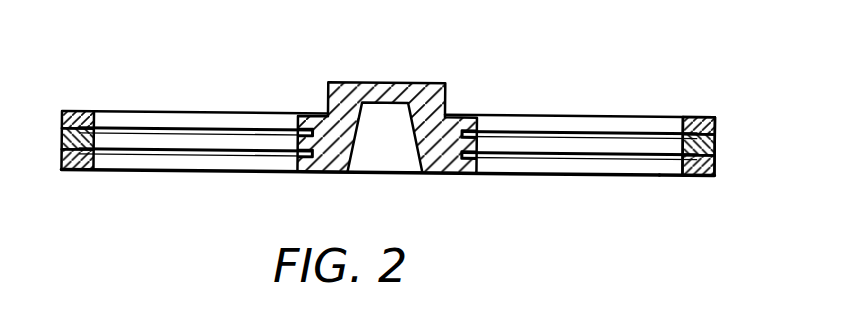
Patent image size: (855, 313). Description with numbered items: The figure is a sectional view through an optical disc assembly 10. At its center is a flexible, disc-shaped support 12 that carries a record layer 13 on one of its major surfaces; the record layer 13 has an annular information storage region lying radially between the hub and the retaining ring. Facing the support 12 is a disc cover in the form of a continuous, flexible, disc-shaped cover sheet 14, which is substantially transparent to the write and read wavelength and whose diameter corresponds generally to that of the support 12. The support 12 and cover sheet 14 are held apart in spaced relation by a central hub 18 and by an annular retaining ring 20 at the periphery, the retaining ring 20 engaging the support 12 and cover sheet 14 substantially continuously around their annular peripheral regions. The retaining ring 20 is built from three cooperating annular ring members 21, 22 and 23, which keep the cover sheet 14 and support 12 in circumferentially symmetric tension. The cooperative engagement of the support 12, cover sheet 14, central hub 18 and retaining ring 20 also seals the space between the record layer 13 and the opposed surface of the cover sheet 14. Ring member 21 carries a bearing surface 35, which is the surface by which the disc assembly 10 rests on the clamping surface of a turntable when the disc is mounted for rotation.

The optical disc assembly 10 is at (621, 81).
The disc-shaped support 12 is at (530, 158).
The record layer 13 is at (580, 148).
The cover sheet 14 is at (147, 128).
The central hub 18 is at (345, 71).
The annular retaining ring 20 is at (701, 186).
The annular ring member 21 is at (718, 177).
The annular ring member 22 is at (716, 140).
The annular ring member 23 is at (707, 118).
The bearing surface 35 is at (687, 177).